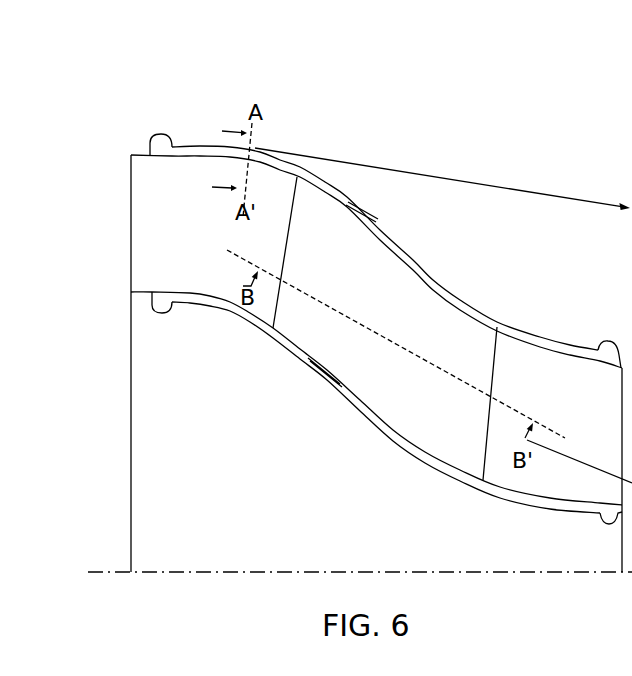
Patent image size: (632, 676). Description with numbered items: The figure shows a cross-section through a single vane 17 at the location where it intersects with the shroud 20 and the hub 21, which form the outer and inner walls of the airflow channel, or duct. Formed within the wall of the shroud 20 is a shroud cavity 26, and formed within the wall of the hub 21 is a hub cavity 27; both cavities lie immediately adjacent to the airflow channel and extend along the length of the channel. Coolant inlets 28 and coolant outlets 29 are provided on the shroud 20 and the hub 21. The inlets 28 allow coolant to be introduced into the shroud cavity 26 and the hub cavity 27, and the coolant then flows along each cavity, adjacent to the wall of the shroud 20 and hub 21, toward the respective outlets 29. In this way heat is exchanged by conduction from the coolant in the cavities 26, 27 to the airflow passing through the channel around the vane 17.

The shroud 20 is at (142, 153).
The shroud cavity 26 is at (187, 150).
The hub cavity 27 is at (187, 297).
The hub 21 is at (230, 315).
The coolant inlets 28 is at (163, 125).
The coolant outlets 29 is at (608, 343).
The vane 17 is at (318, 218).